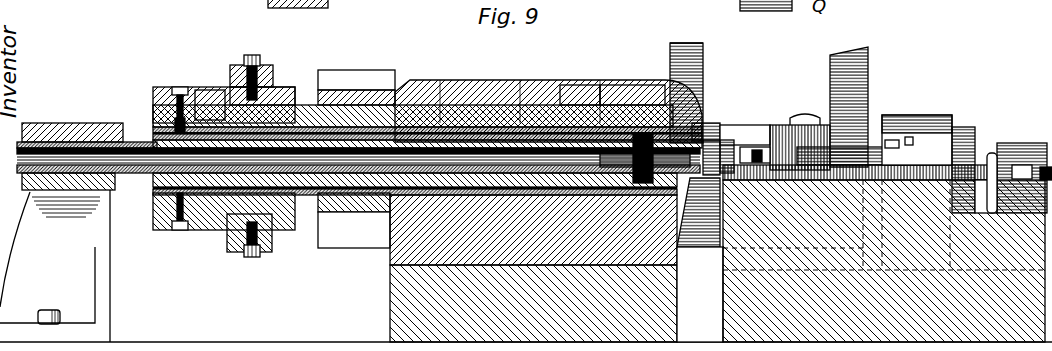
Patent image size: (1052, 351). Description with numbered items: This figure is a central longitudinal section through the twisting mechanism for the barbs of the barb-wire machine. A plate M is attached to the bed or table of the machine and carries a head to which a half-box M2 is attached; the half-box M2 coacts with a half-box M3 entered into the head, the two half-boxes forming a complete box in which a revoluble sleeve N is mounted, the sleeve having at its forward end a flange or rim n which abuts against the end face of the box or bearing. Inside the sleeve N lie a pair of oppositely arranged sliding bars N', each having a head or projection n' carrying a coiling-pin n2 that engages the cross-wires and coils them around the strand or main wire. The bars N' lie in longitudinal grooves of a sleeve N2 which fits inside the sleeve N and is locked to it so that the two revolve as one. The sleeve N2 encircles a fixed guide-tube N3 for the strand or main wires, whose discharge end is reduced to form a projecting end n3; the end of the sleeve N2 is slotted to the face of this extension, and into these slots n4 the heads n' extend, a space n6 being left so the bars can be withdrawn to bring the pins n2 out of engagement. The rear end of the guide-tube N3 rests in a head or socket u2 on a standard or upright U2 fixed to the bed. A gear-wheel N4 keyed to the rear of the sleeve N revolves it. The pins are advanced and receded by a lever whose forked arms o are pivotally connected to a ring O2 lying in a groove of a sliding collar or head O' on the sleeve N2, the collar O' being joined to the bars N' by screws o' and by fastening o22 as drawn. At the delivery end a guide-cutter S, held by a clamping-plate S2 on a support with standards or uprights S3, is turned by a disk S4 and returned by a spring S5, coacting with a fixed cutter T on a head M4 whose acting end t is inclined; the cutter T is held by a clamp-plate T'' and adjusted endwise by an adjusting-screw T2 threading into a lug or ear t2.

The head or socket u2 is at (72, 145).
The standard or upright U2 is at (55, 266).
The revoluble sleeve N is at (358, 112).
The sliding bars N' is at (579, 74).
The sleeve N2 is at (540, 87).
The guide-tube N3 is at (143, 142).
The gear-wheel N4 is at (432, 65).
The screws o' is at (181, 153).
The sliding collar or head O' is at (210, 81).
The ring O2 is at (213, 257).
The arms o is at (268, 147).
The bolt o22 is at (249, 253).
The plate M is at (556, 294).
The half-box M2 is at (618, 83).
The half-box M3 is at (417, 250).
The head M4 is at (884, 253).
The flange or rim n is at (713, 121).
The head or projection n' is at (698, 221).
The coiling-pin n2 is at (706, 190).
The projecting end n3 is at (745, 149).
The slots n4 is at (651, 76).
The space n6 is at (634, 133).
The guide-cutter S is at (742, 155).
The clamping-plate S2 is at (735, 136).
The standard or upright S3 is at (702, 57).
The disk S4 is at (895, 123).
The spring S5 is at (957, 128).
The cutter T is at (868, 120).
The rod bar T'' is at (852, 146).
The adjusting-screw T2 is at (997, 167).
The acting end t is at (947, 143).
The lug or ear t2 is at (1020, 167).